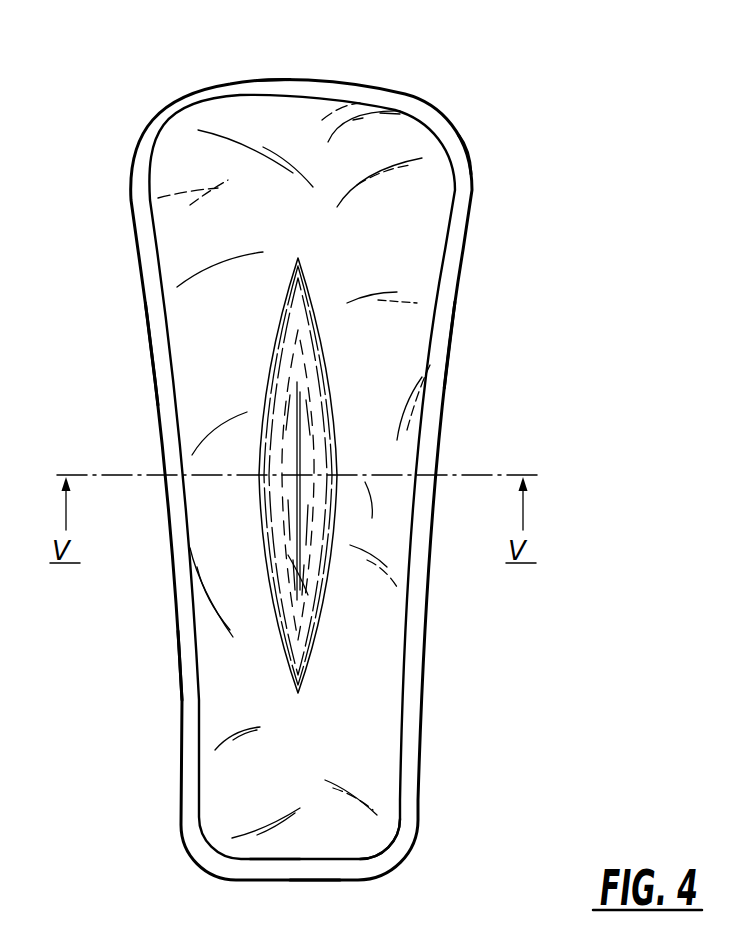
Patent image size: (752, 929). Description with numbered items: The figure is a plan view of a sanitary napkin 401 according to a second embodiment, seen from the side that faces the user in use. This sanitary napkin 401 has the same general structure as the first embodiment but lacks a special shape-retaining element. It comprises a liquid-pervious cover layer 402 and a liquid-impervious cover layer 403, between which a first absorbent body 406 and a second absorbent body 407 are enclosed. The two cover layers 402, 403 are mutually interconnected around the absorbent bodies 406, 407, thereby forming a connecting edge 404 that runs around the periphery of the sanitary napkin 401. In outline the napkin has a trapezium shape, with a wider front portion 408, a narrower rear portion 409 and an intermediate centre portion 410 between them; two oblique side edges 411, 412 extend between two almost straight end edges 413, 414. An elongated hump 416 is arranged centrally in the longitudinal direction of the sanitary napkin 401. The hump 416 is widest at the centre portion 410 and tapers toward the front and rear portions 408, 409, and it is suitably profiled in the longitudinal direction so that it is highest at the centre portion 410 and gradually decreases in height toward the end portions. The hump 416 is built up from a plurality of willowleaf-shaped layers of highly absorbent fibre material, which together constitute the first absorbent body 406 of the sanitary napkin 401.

The sanitary napkin 401 is at (490, 94).
The liquid-pervious cover layer 402 is at (422, 240).
The liquid-impervious cover layer 403 is at (390, 848).
The connecting edge 404 is at (467, 178).
The first absorbent body 406 is at (305, 593).
The second absorbent body 407 is at (222, 668).
The front portion 408 is at (322, 120).
The rear portion 409 is at (275, 843).
The centre portion 410 is at (372, 498).
The oblique side edge 411 is at (138, 344).
The oblique side edge 412 is at (464, 327).
The end edge 413 is at (262, 67).
The end edge 414 is at (273, 889).
The hump 416 is at (317, 430).